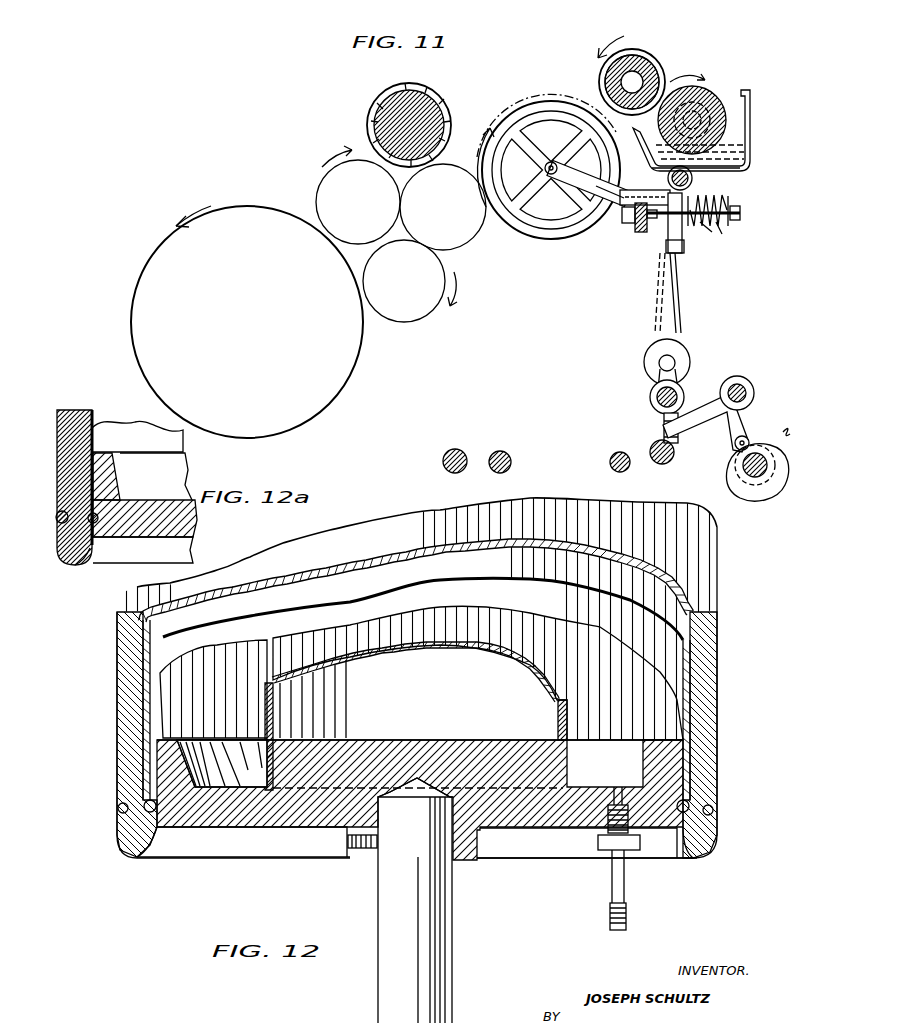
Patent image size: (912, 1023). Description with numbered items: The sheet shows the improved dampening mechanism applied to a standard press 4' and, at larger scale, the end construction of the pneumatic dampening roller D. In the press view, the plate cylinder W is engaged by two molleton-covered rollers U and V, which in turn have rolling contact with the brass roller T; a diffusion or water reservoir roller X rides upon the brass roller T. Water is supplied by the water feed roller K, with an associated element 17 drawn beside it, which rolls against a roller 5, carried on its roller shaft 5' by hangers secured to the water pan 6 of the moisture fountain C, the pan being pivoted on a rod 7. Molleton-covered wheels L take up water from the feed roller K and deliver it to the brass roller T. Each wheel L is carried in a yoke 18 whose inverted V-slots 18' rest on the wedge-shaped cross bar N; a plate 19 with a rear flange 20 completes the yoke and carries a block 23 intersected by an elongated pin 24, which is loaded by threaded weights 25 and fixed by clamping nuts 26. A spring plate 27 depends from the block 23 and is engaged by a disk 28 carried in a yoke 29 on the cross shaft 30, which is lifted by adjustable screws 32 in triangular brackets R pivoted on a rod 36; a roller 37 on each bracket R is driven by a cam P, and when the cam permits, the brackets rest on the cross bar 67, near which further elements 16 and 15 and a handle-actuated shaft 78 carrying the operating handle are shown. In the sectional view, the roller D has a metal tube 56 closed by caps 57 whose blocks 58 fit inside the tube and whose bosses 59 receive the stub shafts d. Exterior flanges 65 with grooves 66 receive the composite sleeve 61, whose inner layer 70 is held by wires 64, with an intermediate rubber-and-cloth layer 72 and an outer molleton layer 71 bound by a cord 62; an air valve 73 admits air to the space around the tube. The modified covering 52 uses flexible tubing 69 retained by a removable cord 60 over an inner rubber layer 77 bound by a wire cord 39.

In FIG. 11, the plate cylinder W is at (250, 222).
In FIG. 11, the standard press 4' is at (170, 200).
In FIG. 11, the molleton-covered roller U is at (332, 197).
In FIG. 11, the brass roller T is at (486, 222).
In FIG. 11, the molleton-covered roller V is at (426, 313).
In FIG. 11, the diffusion or water reservoir roller X is at (397, 103).
In FIG. 11, the molleton-covered wheels or spools L is at (549, 101).
In FIG. 11, the water feed roller K is at (636, 50).
In FIG. 11, the gear 17 is at (661, 86).
In FIG. 11, the roller 5 is at (692, 101).
In FIG. 11, the roller shaft 5' is at (709, 99).
In FIG. 11, the moisture fountain C is at (752, 100).
In FIG. 11, the water pan 6 is at (750, 128).
In FIG. 11, the rod 7 is at (694, 178).
In FIG. 11, the yoke 18 is at (596, 179).
In FIG. 11, the inverted V-slots 18' is at (611, 227).
In FIG. 11, the plate 19 is at (636, 192).
In FIG. 11, the rear flange 20 is at (597, 200).
In FIG. 11, the cross bar N is at (640, 234).
In FIG. 11, the block 23 is at (683, 240).
In FIG. 11, the elongated pin 24 is at (742, 212).
In FIG. 11, the internally-threaded weights 25 is at (728, 205).
In FIG. 11, the clamping nuts 26 is at (700, 228).
In FIG. 11, the spring plate 27 is at (680, 297).
In FIG. 11, the disk 28 is at (682, 348).
In FIG. 11, the yoke 29 is at (676, 371).
In FIG. 11, the cross shaft 30 is at (652, 398).
In FIG. 11, the adjustable screws 32 is at (660, 425).
In FIG. 11, the rear side brackets R is at (716, 404).
In FIG. 11, the rod 36 is at (755, 393).
In FIG. 11, the roller 37 is at (750, 437).
In FIG. 11, the cross bar 67 is at (674, 458).
In FIG. 11, the shaft 16 is at (628, 468).
In FIG. 11, the cam P is at (769, 490).
In FIG. 11, the handle-actuated shaft 78 is at (455, 449).
In FIG. 11, the shaft 15 is at (502, 451).
In FIG. 12a, the sleeve covering 52 is at (56, 475).
In FIG. 12a, the flexible tubing 69 is at (61, 445).
In FIG. 12a, the inner pure rubber layer 77 is at (103, 426).
In FIG. 12a, the exterior flanges 65 is at (116, 470).
In FIG. 12, the exterior flanges 65 is at (163, 768).
In FIG. 12a, the caps 57 is at (150, 530).
In FIG. 12, the caps 57 is at (212, 835).
In FIG. 12a, the removable cord 60 is at (57, 522).
In FIG. 12a, the wire cord 39 is at (90, 560).
In FIG. 12, the dampening roller D is at (342, 527).
In FIG. 12, the molleton composite sleeve 61 is at (728, 608).
In FIG. 12, the outer layer 71 is at (118, 686).
In FIG. 12, the intermediate layer 72 is at (340, 598).
In FIG. 12, the inner layer 70 is at (163, 728).
In FIG. 12, the metal tube 56 is at (567, 710).
In FIG. 12, the blocks 58 is at (543, 770).
In FIG. 12, the stub shafts d is at (440, 970).
In FIG. 12, the exterior boss 59 is at (358, 855).
In FIG. 12, the air valve 73 is at (610, 888).
In FIG. 12, the cord 62 is at (117, 808).
In FIG. 12, the wires 64 is at (150, 818).
In FIG. 12, the grooves 66 is at (160, 812).